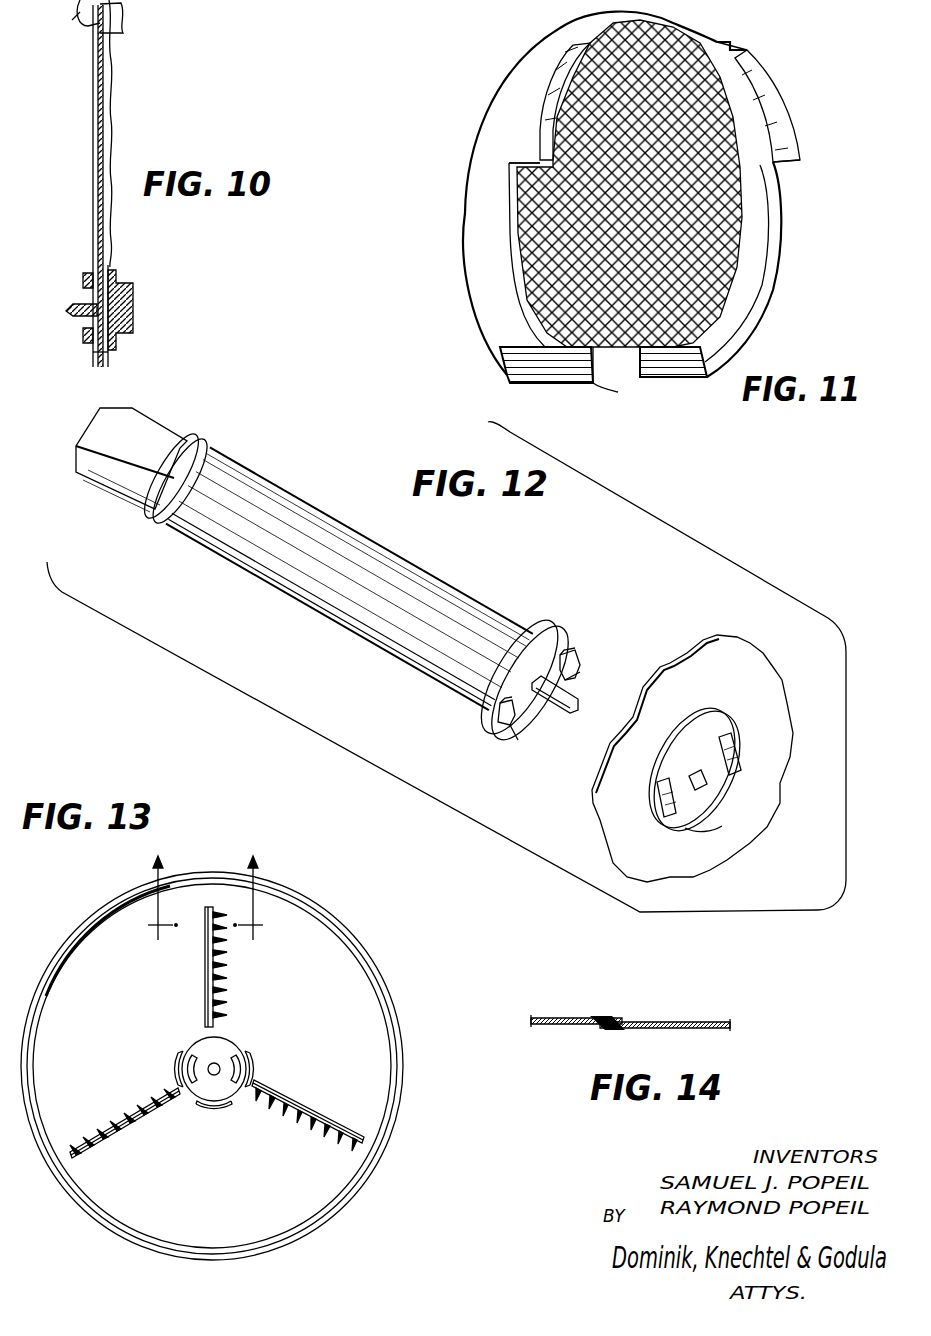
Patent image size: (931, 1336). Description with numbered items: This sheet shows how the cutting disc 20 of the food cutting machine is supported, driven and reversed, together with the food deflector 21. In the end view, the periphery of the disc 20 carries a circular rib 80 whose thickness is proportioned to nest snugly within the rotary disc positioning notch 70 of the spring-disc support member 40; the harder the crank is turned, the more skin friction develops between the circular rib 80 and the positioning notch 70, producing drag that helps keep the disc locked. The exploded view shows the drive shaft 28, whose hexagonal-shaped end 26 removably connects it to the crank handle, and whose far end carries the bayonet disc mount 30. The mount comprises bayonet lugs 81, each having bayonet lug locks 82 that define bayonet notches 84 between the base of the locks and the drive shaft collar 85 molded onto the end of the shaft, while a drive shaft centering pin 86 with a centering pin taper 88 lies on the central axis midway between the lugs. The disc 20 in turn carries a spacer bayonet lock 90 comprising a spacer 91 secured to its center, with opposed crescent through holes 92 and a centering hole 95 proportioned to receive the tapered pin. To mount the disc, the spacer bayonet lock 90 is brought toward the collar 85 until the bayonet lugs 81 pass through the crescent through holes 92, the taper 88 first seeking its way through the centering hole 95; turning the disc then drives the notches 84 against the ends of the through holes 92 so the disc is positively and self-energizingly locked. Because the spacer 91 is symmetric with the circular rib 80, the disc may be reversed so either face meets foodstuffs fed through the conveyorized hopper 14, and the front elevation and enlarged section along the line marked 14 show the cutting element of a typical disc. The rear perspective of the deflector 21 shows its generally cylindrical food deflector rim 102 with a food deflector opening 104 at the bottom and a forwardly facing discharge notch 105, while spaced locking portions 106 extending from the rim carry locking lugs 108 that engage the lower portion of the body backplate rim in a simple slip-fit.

In FIG. 13, the conveyorized hopper 14 is at (206, 884).
In FIG. 10, the disc 20 is at (102, 115).
In FIG. 12, the disc 20 is at (757, 603).
In FIG. 13, the disc 20 is at (338, 930).
In FIG. 14, the disc 20 is at (700, 1020).
In FIG. 11, the food deflector 21 is at (675, 18).
In FIG. 12, the hexagonal-shaped end 26 is at (130, 440).
In FIG. 12, the drive shaft 28 is at (250, 510).
In FIG. 10, the bayonet disc mount 30 is at (62, 294).
In FIG. 12, the bayonet disc mount 30 is at (549, 545).
In FIG. 10, the spring-disc support member 40 is at (72, 24).
In FIG. 10, the rotary disc positioning notch 70 is at (118, 0).
In FIG. 10, the circular rib 80 is at (100, 22).
In FIG. 12, the bayonet lugs 81 is at (580, 676).
In FIG. 12, the bayonet lug locks 82 is at (580, 660).
In FIG. 12, the bayonet notches 84 is at (562, 656).
In FIG. 12, the drive shaft collar 85 is at (528, 650).
In FIG. 12, the drive shaft centering pin 86 is at (585, 698).
In FIG. 10, the centering pin taper 88 is at (72, 310).
In FIG. 12, the centering pin taper 88 is at (552, 722).
In FIG. 12, the spacer bayonet lock 90 is at (696, 828).
In FIG. 10, the spacer 91 is at (93, 358).
In FIG. 12, the spacer 91 is at (722, 728).
In FIG. 13, the spacer 91 is at (190, 1042).
In FIG. 12, the crescent through holes 92 is at (742, 772).
In FIG. 13, the crescent through holes 92 is at (240, 1072).
In FIG. 12, the centering hole 95 is at (704, 782).
In FIG. 13, the centering hole 95 is at (219, 1065).
In FIG. 11, the food deflector rim 102 is at (493, 300).
In FIG. 11, the food deflector opening 104 is at (642, 380).
In FIG. 11, the discharge notch 105 is at (605, 383).
In FIG. 11, the locking portions 106 is at (530, 117).
In FIG. 11, the locking lugs 108 is at (560, 86).